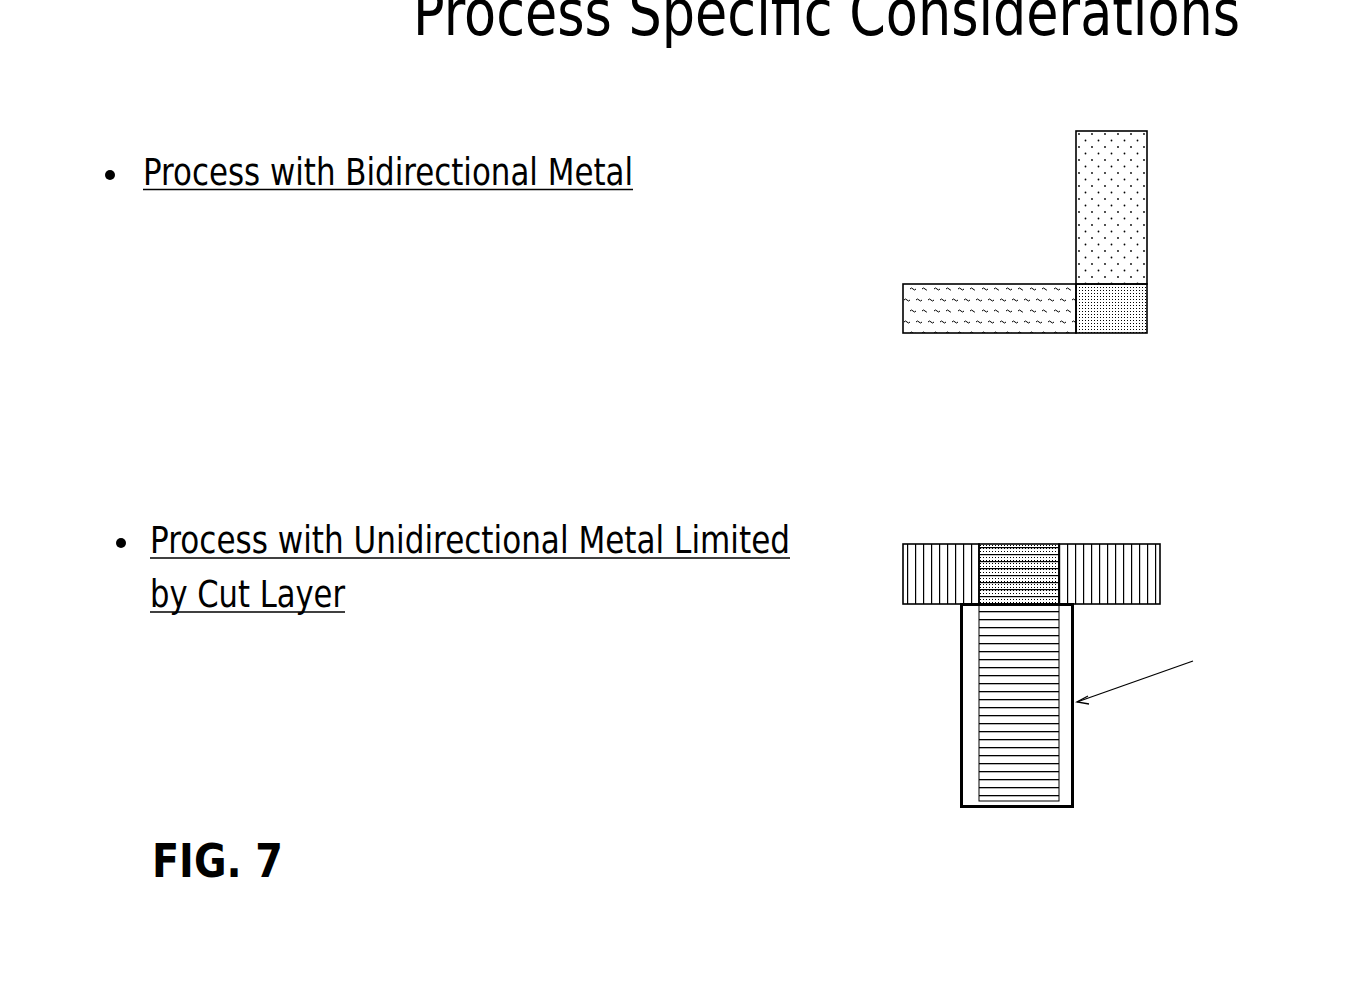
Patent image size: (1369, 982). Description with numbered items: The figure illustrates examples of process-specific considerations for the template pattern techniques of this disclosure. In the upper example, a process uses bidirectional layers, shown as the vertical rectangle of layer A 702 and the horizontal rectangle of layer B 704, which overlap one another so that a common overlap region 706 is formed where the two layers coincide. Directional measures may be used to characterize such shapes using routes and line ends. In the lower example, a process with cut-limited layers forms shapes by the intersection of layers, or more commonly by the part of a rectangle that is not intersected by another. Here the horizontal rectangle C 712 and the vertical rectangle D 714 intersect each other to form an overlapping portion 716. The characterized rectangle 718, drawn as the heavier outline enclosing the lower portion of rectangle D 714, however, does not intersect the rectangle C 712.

The bidirectional layer A 702 is at (1150, 190).
The bidirectional layer B 704 is at (998, 278).
The overlap region A/B 706 is at (1100, 334).
The rectangle C 712 is at (940, 543).
The rectangle D 714 is at (1014, 792).
The overlapping portion C/D 716 is at (1025, 543).
The characterized rectangle D1 718 is at (1122, 725).